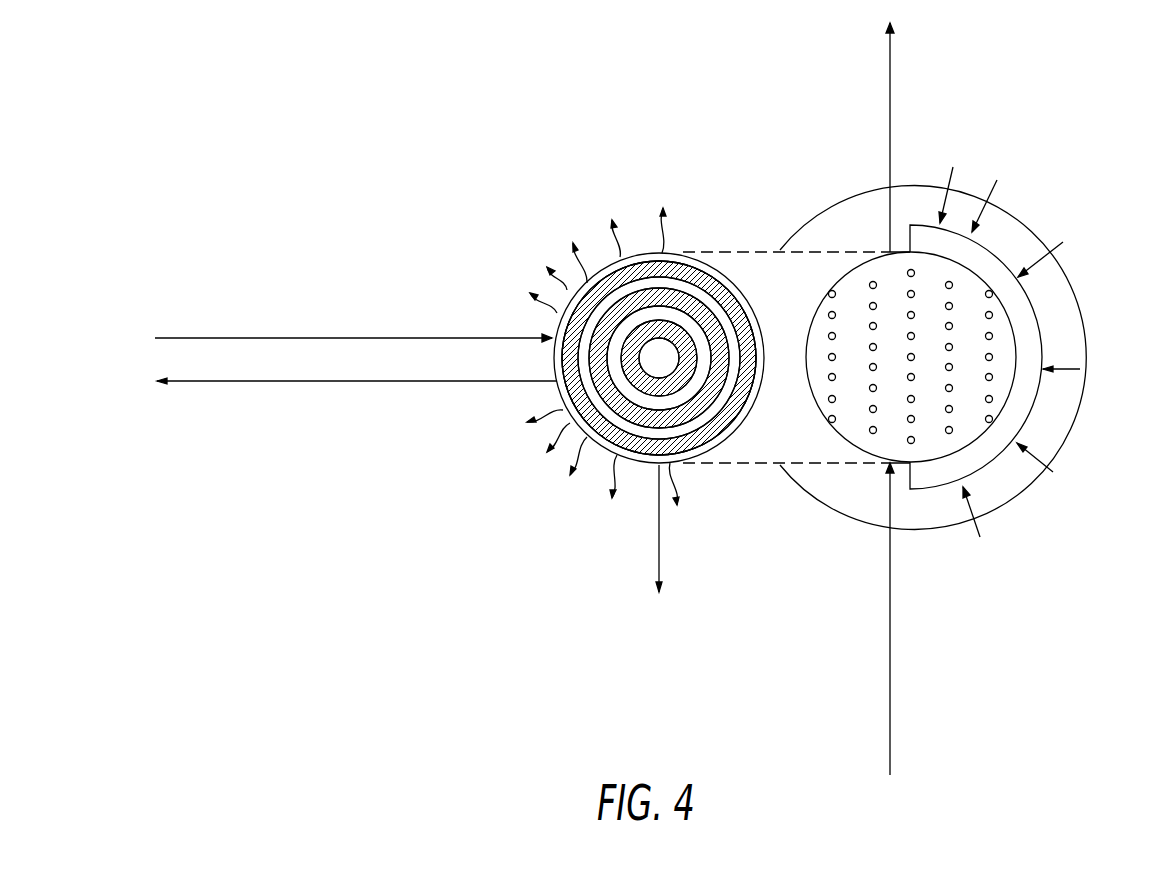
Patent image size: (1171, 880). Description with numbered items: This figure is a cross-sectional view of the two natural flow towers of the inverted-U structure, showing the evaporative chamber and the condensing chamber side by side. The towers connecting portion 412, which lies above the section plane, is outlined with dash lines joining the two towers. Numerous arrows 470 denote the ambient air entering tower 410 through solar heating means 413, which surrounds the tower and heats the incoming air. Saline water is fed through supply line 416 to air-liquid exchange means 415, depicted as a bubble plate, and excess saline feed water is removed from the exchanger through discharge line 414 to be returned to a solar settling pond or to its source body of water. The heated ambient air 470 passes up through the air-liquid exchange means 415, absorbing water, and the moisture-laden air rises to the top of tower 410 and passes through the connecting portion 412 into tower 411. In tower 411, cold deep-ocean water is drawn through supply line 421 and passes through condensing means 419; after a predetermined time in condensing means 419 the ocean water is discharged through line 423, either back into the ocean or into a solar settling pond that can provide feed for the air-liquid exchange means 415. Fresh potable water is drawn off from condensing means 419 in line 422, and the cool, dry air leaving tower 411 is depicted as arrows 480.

The tower 410 is at (965, 453).
The tower 411 is at (567, 413).
The connecting portion 412 is at (736, 251).
The solar heating means 413 is at (960, 248).
The discharge line 414 is at (890, 85).
The air-liquid exchange means 415 is at (858, 418).
The supply line 416 is at (890, 657).
The condensing means 419 is at (612, 277).
The supply line 421 is at (260, 337).
The line 422 is at (660, 533).
The line 423 is at (240, 382).
The ambient air 470 is at (1063, 242).
The cool, dry air 480 is at (618, 238).